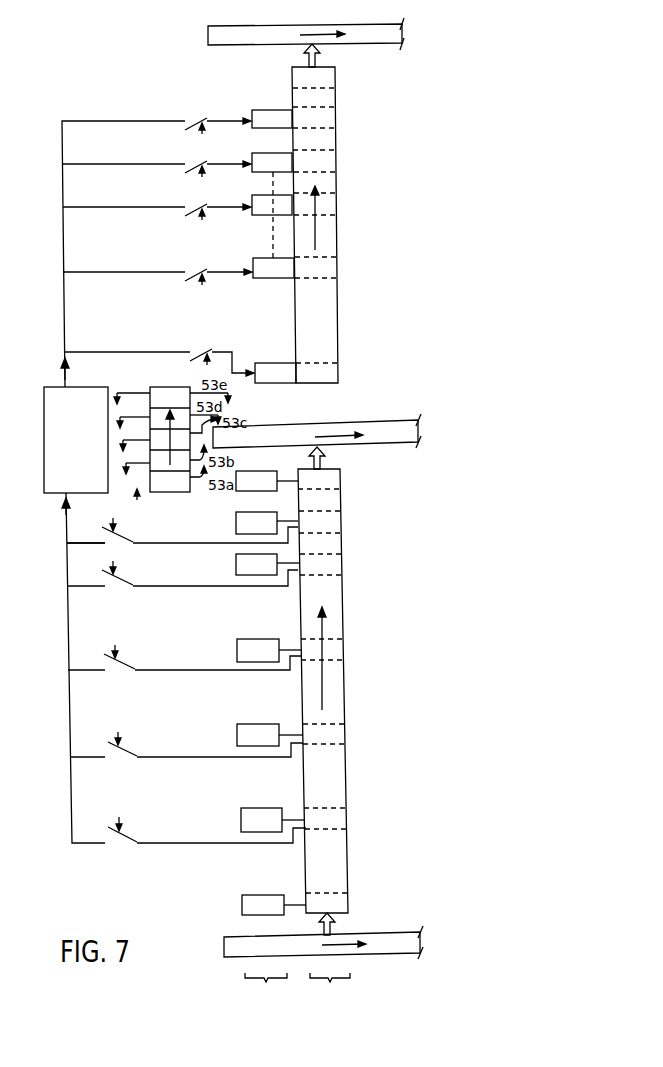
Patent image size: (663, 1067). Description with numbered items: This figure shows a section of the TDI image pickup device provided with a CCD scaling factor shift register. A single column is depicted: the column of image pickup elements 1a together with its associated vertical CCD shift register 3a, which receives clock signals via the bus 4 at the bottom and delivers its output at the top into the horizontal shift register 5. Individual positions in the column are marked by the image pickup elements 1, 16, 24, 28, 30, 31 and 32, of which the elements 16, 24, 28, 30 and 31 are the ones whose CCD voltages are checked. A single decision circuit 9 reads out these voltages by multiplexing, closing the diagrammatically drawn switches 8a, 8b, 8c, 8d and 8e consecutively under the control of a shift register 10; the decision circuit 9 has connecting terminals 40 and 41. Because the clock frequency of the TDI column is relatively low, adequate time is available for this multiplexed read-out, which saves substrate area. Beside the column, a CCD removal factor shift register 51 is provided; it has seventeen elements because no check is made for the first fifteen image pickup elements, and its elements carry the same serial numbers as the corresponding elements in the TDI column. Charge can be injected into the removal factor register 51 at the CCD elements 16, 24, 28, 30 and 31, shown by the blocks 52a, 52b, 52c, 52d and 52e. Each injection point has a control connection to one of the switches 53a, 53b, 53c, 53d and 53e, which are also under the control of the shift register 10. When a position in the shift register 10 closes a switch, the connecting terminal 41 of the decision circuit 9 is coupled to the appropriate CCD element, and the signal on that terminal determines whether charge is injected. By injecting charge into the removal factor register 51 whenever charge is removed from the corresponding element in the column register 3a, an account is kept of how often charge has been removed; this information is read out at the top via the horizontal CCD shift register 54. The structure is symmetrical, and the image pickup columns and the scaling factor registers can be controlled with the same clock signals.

The horizontal CCD shift register 54 is at (230, 34).
The CCD removal factor shift register 51 is at (338, 324).
The charge injection block 52a is at (275, 373).
The charge injection block 52b is at (273, 268).
The charge injection block 52c is at (272, 205).
The charge injection block 52d is at (272, 162).
The charge injection block 52e is at (272, 119).
The switch 53a is at (210, 355).
The switch 53b is at (206, 272).
The switch 53c is at (206, 207).
The switch 53d is at (206, 164).
The switch 53e is at (206, 120).
The decision circuit 9 is at (55, 490).
The connecting terminal 41 is at (67, 366).
The connecting terminal 40 is at (67, 506).
The shift register 10 is at (188, 492).
The switch 8a is at (142, 855).
The switch 8b is at (142, 768).
The switch 8c is at (139, 681).
The switch 8d is at (139, 596).
The switch 8e is at (139, 553).
The horizontal shift register 5 is at (380, 424).
The image pickup element 32 is at (267, 481).
The image pickup element 31 is at (267, 523).
The image pickup element 30 is at (267, 564).
The image pickup element 28 is at (269, 650).
The image pickup element 24 is at (270, 735).
The image pickup element 16 is at (273, 820).
The image pickup element 1 is at (274, 905).
The bus 4 is at (230, 958).
The column of image pickup elements 1a is at (266, 991).
The vertical CCD shift register 3a is at (330, 991).